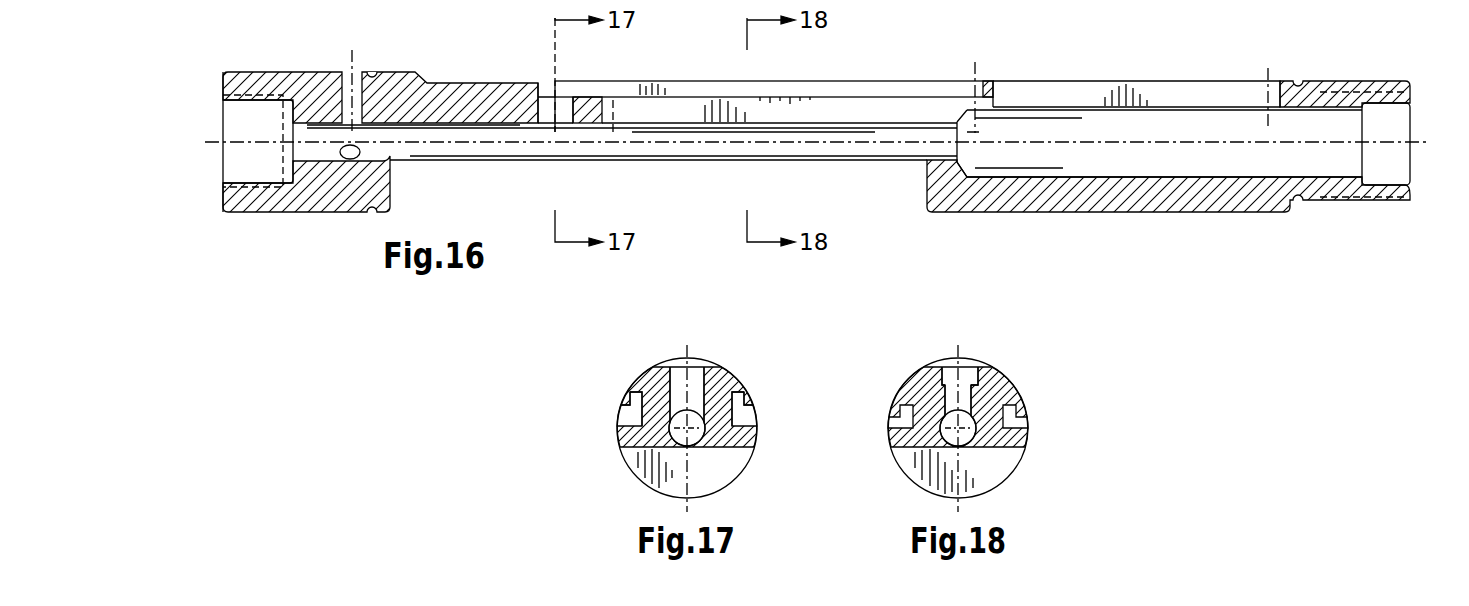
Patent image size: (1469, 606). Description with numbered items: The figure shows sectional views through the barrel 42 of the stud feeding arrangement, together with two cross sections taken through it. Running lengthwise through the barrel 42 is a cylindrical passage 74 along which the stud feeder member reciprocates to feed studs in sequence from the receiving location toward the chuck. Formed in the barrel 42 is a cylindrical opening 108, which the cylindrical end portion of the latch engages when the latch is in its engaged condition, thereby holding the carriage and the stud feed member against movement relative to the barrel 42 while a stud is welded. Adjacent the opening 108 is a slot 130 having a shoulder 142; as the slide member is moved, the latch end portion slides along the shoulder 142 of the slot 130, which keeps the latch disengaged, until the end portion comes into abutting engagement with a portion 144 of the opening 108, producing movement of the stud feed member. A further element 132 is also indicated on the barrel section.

In FIG. 16, the barrel 42 is at (1245, 58).
In FIG. 17, the barrel 42 is at (782, 414).
In FIG. 18, the barrel 42 is at (1062, 427).
In FIG. 16, the cylindrical passage 74 is at (637, 146).
In FIG. 17, the cylindrical passage 74 is at (692, 436).
In FIG. 18, the cylindrical passage 74 is at (963, 440).
In FIG. 16, the cylindrical opening 108 is at (550, 116).
In FIG. 17, the cylindrical opening 108 is at (700, 356).
In FIG. 16, the slot 130 is at (1078, 76).
In FIG. 18, the slot 130 is at (966, 393).
In FIG. 16, the retaining block 132 is at (986, 94).
In FIG. 16, the shoulder 142 is at (857, 97).
In FIG. 18, the shoulder 142 is at (985, 396).
In FIG. 16, the portion 144 is at (540, 92).
In FIG. 17, the portion 144 is at (676, 372).